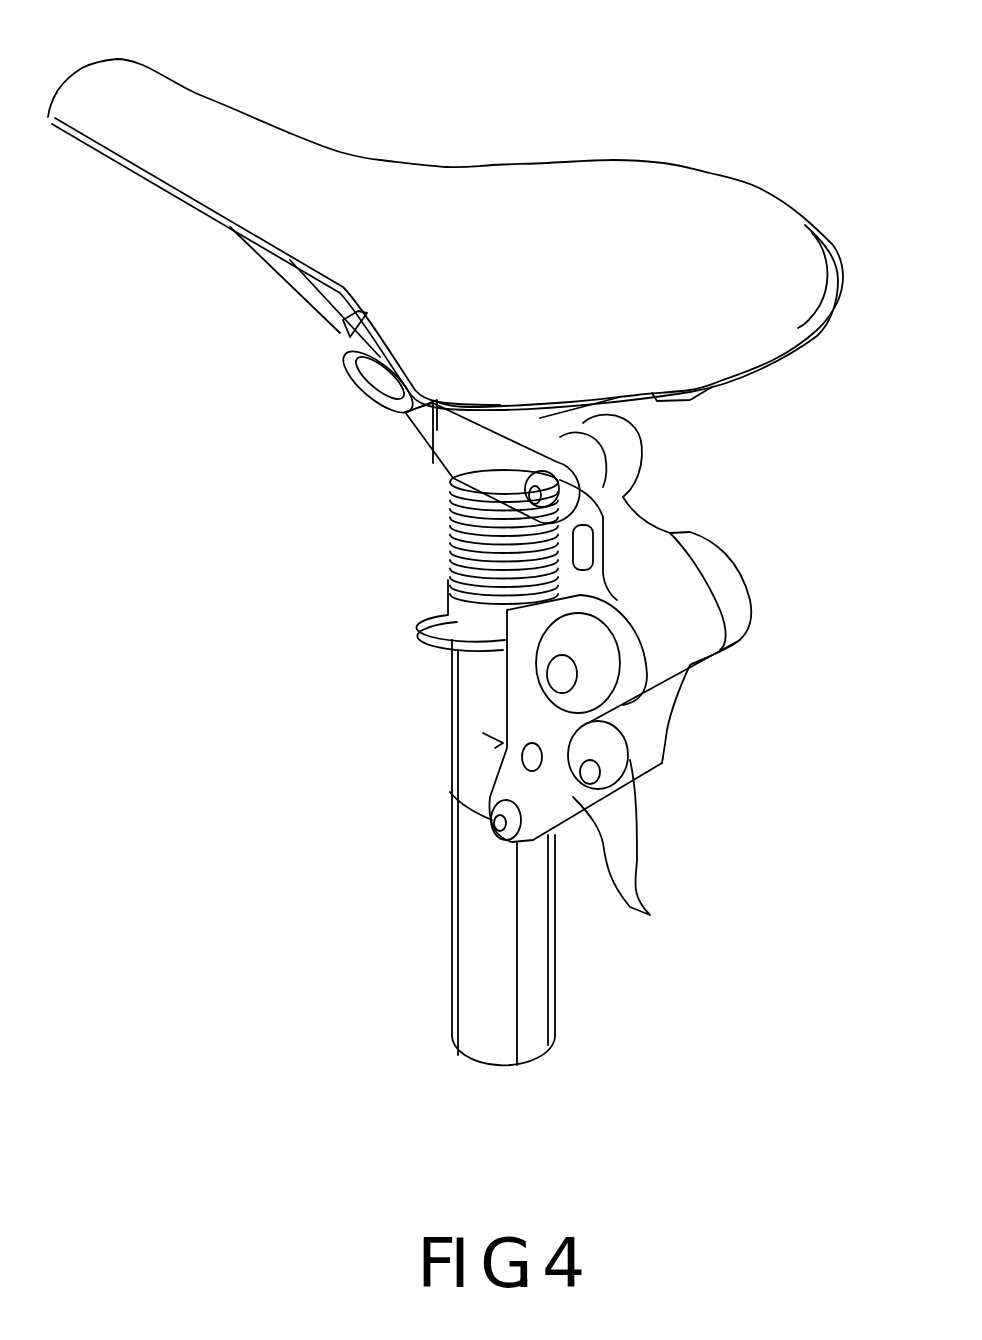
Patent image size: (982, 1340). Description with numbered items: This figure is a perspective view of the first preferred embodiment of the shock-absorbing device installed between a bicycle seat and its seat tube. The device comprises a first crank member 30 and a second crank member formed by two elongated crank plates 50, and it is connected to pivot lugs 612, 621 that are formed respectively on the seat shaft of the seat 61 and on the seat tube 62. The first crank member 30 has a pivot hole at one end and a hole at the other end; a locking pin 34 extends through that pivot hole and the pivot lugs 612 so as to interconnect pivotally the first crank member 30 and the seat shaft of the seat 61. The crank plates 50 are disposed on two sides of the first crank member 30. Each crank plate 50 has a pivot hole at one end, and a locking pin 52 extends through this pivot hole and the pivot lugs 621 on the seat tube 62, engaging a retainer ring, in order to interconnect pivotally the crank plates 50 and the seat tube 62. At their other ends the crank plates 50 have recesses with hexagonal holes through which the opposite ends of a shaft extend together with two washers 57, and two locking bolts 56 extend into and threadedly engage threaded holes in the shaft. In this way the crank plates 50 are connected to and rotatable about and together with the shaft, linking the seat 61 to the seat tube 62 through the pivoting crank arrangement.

The seat 61 is at (493, 197).
The pivot lugs 612 is at (640, 450).
The first crank member 30 is at (673, 503).
The locking pin 34 is at (450, 507).
The washers 57 is at (550, 638).
The locking bolts 56 is at (560, 680).
The crank plates 50 is at (497, 703).
The locking pin 52 is at (497, 817).
The pivot lugs 621 is at (650, 915).
The seat tube 62 is at (510, 1013).